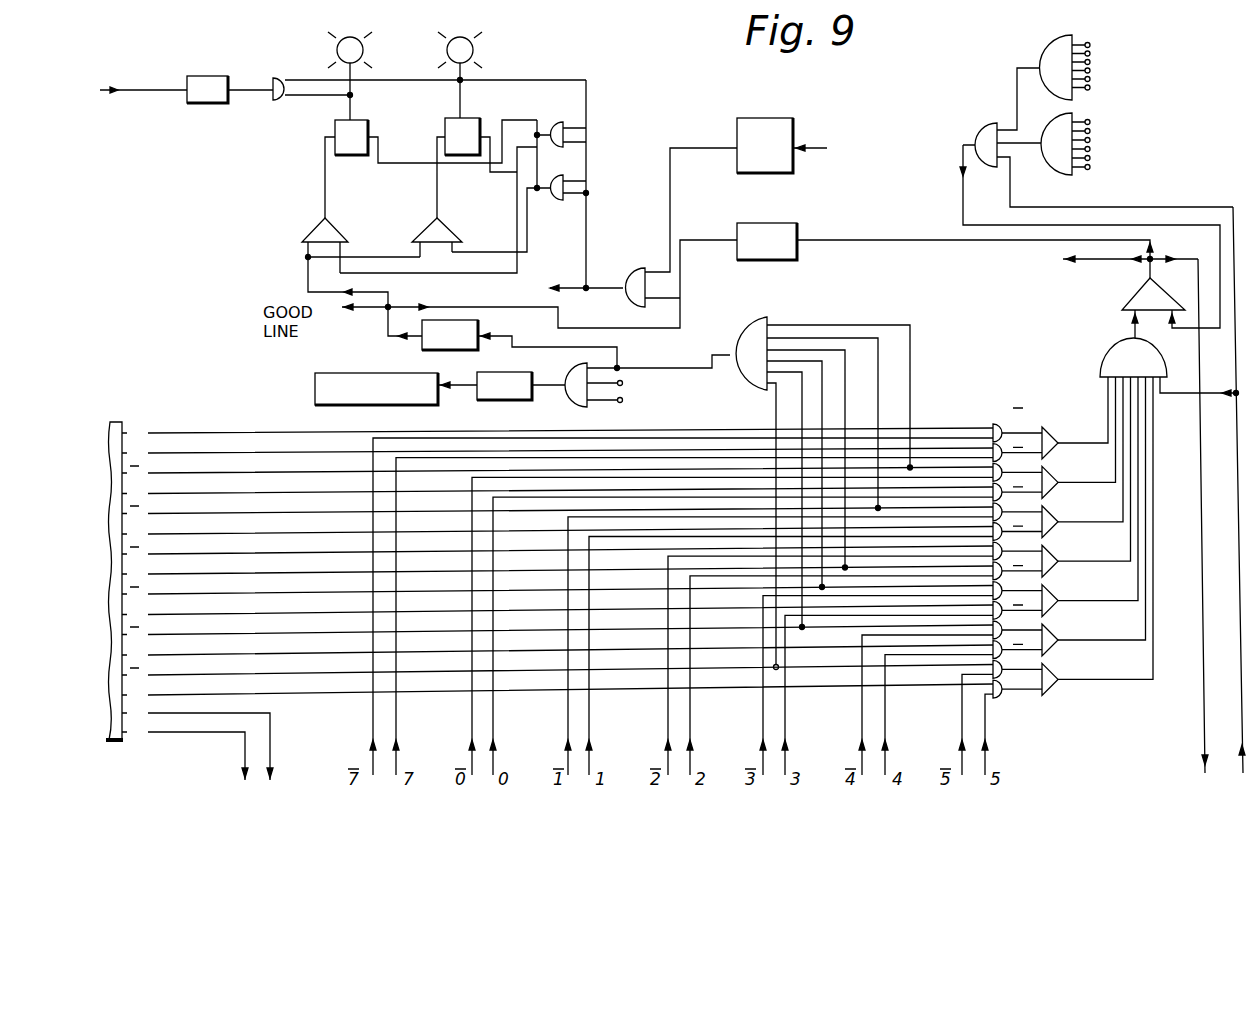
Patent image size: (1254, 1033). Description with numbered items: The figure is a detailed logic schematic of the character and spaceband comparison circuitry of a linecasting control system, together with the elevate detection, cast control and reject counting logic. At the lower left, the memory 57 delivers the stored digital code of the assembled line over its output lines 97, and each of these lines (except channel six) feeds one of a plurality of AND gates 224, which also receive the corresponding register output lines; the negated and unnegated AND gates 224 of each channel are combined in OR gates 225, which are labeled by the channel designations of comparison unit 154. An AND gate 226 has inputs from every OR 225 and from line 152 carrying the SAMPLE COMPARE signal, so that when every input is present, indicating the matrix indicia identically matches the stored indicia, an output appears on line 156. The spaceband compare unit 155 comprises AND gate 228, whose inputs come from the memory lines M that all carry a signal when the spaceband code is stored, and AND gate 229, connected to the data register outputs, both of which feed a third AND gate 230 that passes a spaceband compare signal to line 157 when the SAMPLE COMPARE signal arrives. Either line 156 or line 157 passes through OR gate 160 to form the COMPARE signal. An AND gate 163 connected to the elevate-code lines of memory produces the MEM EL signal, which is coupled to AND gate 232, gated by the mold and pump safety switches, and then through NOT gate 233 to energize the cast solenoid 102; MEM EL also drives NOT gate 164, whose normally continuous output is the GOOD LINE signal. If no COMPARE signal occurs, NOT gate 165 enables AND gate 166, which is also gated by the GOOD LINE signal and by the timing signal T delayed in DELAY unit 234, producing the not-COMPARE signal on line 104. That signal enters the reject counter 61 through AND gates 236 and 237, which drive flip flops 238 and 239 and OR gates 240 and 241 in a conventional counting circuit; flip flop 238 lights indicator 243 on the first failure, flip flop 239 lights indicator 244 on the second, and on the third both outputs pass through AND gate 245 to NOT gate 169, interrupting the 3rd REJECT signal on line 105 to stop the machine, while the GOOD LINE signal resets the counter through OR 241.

The memory 57 is at (110, 412).
The reject counter 61 is at (557, 28).
The memory output lines 97 is at (190, 432).
The cast solenoid 102 is at (340, 373).
The not-COMPARE line 104 is at (573, 286).
The third REJECT line 105 is at (160, 92).
The SAMPLE COMPARE line 152 is at (1241, 727).
The comparison unit 154 is at (1037, 406).
The spaceband compare unit 155 is at (997, 98).
The character compare output line 156 is at (1132, 333).
The spaceband compare output line 157 is at (962, 207).
The OR gate 160 is at (1133, 293).
The AND gate 163 is at (745, 318).
The NOT gate 164 is at (422, 350).
The NOT gate 165 is at (767, 261).
The AND gate 166 is at (640, 268).
The NOT gate 169 is at (200, 77).
The AND gates 224 is at (989, 408).
The OR gates 225 is at (1046, 695).
The AND gate 226 is at (1106, 360).
The AND gate 228 is at (1040, 38).
The AND gate 229 is at (1068, 176).
The AND gate 230 is at (988, 168).
The AND gate 232 is at (578, 406).
The NOT gate 233 is at (492, 401).
The DELAY unit 234 is at (745, 118).
The AND gate 236 is at (552, 201).
The AND gate 237 is at (562, 121).
The flip flop 238 is at (445, 128).
The flip flop 239 is at (336, 130).
The OR gate 240 is at (430, 221).
The OR gate 241 is at (318, 221).
The visual indicating light 243 is at (474, 52).
The indicator light 244 is at (339, 50).
The AND gate 245 is at (278, 102).